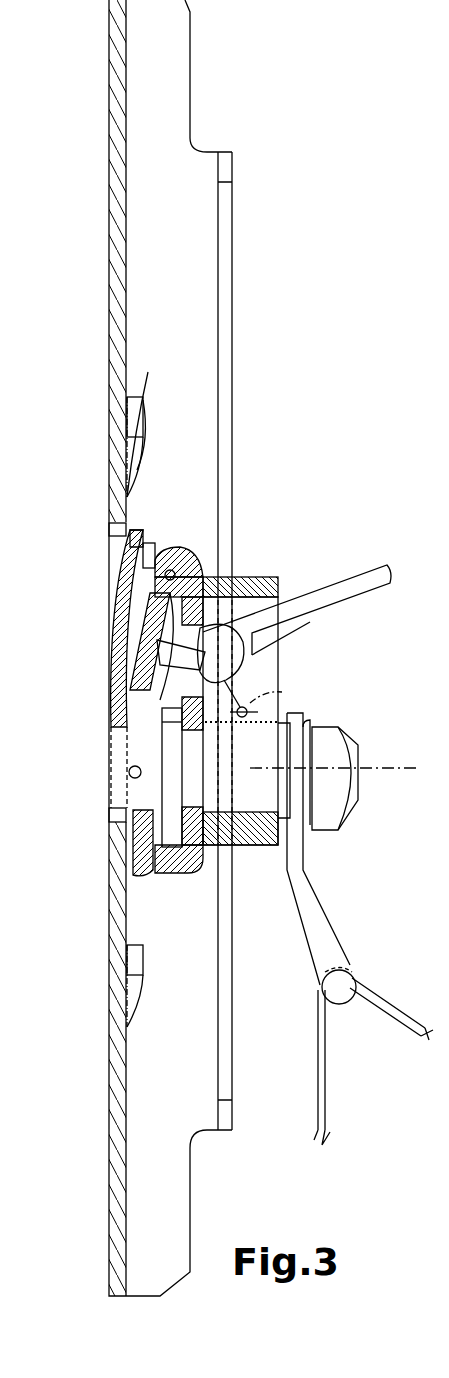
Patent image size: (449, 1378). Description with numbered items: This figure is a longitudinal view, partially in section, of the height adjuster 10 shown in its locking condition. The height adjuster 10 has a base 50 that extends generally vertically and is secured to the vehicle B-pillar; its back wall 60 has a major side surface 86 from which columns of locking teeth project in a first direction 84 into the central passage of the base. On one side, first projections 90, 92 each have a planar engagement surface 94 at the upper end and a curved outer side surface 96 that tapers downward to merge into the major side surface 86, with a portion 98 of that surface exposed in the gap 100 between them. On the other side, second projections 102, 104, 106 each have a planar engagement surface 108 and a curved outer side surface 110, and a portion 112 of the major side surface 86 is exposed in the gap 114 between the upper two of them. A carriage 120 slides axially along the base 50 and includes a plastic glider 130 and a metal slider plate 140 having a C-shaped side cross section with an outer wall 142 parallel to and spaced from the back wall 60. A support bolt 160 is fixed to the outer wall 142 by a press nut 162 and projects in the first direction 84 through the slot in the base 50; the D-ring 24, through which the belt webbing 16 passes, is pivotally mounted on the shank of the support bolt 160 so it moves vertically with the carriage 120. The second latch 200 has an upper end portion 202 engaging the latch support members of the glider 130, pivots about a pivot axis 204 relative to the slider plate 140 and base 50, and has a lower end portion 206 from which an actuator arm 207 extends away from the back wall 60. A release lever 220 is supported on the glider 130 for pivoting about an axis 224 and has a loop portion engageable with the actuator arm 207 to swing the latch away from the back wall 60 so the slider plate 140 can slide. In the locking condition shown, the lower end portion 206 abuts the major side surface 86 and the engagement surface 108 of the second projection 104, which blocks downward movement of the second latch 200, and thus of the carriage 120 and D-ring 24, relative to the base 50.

The height adjuster 10 is at (283, 455).
The belt webbing 16 is at (316, 1068).
The D-ring 24 is at (325, 925).
The base 50 is at (109, 258).
The back wall 60 is at (109, 312).
The first direction 84 is at (305, 300).
The major side surface 86 is at (126, 303).
The first projection 90 is at (118, 556).
The first projection 92 is at (118, 832).
The planar engagement surface 94 is at (110, 530).
The curved outer side surface 96 is at (188, 873).
The portion of the major side surface 98 is at (130, 770).
The gap 100 is at (140, 800).
The second projection 102 is at (145, 422).
The second projection 104 is at (125, 700).
The second projection 106 is at (148, 985).
The planar engagement surface 108 is at (138, 397).
The curved outer side surface 110 is at (140, 440).
The portion of the major side surface 112 is at (128, 498).
The gap 114 is at (132, 505).
The carriage 120 is at (352, 548).
The glider 130 is at (246, 850).
The slider plate 140 is at (262, 880).
The outer wall 142 is at (162, 718).
The support bolt 160 is at (362, 735).
The press nut 162 is at (158, 842).
The second latch 200 is at (140, 637).
The upper end portion 202 is at (145, 600).
The pivot axis 204 is at (230, 553).
The lower end portion 206 is at (148, 663).
The actuator arm 207 is at (262, 665).
The release lever 220 is at (398, 574).
The axis 224 is at (282, 690).